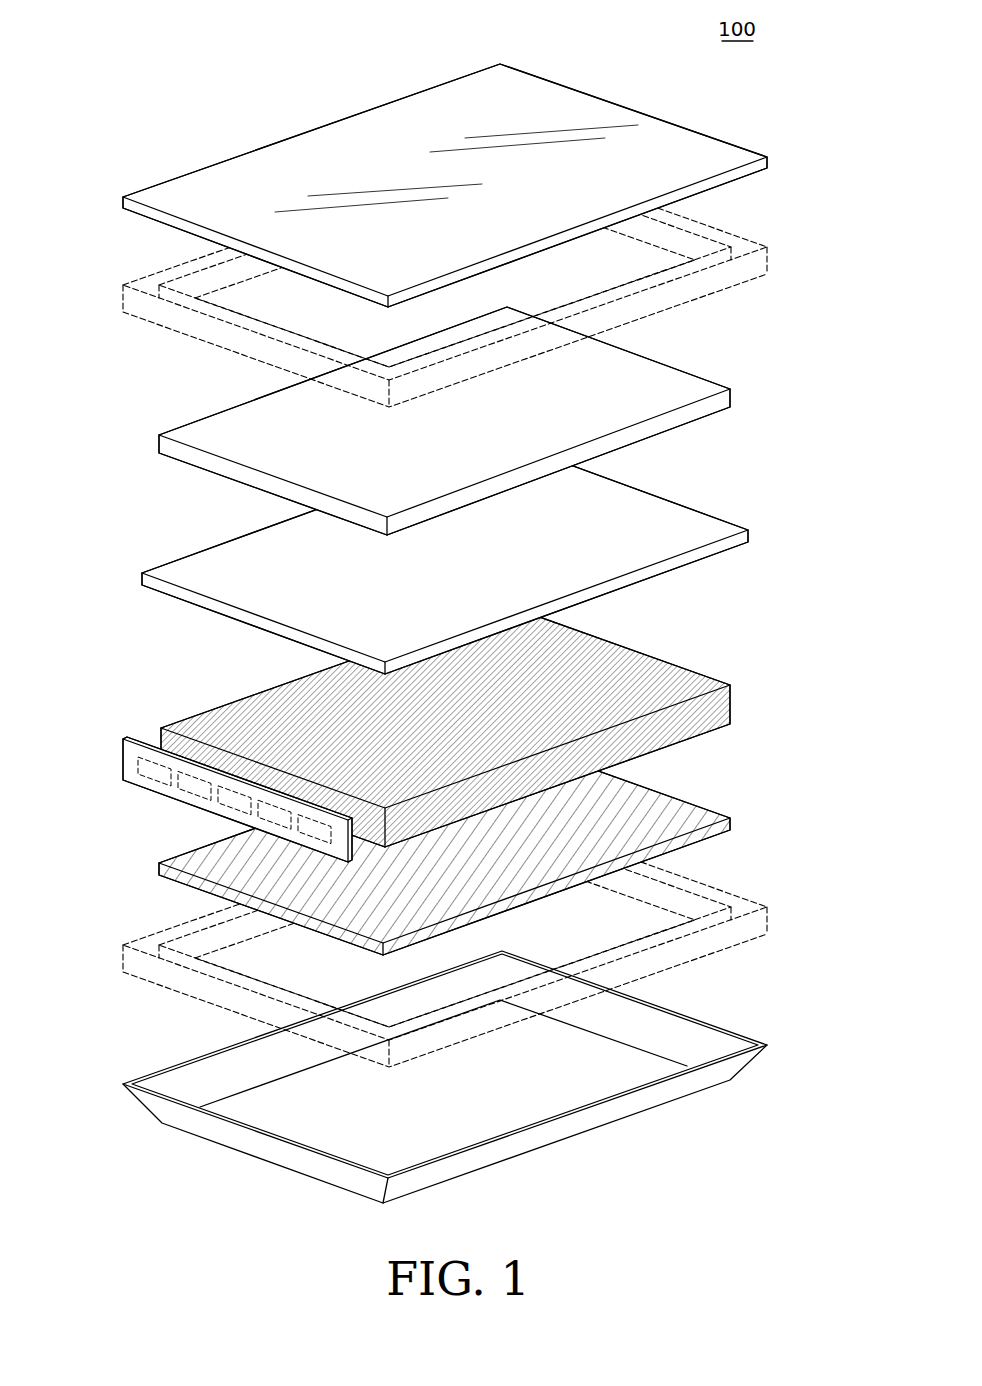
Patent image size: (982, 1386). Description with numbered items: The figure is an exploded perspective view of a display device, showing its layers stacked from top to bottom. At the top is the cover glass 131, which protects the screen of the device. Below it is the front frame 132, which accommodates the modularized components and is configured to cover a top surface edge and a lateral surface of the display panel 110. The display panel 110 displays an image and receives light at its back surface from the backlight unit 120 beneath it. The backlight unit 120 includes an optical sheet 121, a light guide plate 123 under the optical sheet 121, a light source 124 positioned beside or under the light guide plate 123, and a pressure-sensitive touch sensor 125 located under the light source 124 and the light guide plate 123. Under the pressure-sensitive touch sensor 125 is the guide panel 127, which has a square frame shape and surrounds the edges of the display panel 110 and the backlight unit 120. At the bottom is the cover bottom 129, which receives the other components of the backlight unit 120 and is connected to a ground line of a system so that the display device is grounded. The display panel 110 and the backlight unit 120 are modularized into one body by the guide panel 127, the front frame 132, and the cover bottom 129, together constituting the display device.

The display panel 110 is at (731, 396).
The backlight unit 120 is at (818, 998).
The optical sheet 121 is at (670, 540).
The light guide plate 123 is at (672, 680).
The light source 124 is at (128, 768).
The pressure-sensitive touch sensor 125 is at (690, 823).
The guide panel 127 is at (708, 882).
The cover bottom 129 is at (705, 1042).
The cover glass 131 is at (730, 163).
The front frame 132 is at (742, 238).